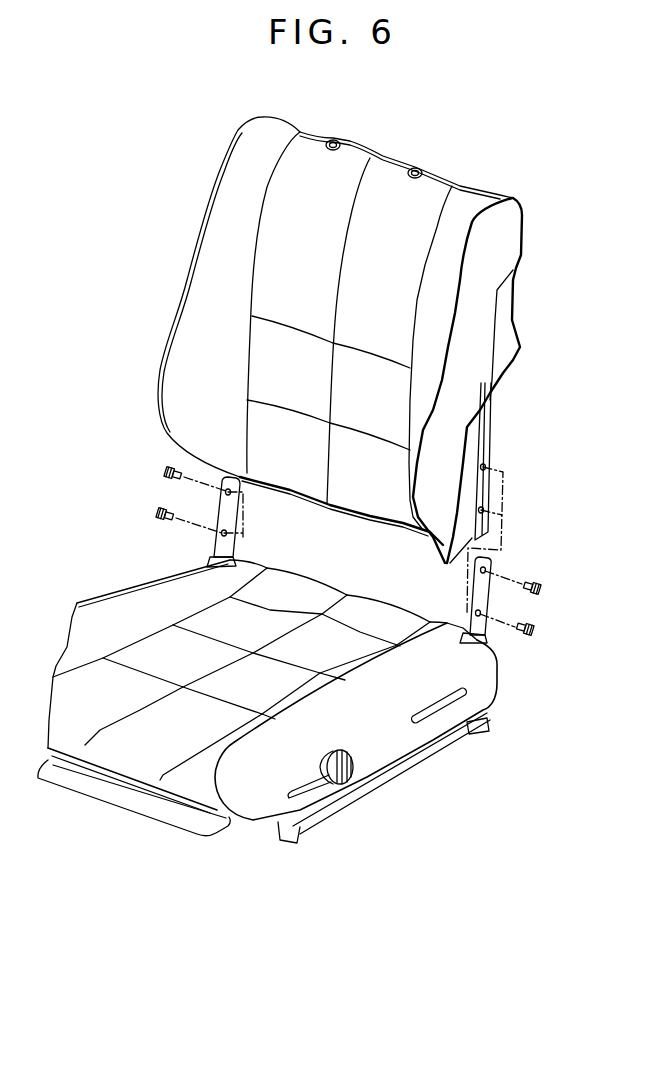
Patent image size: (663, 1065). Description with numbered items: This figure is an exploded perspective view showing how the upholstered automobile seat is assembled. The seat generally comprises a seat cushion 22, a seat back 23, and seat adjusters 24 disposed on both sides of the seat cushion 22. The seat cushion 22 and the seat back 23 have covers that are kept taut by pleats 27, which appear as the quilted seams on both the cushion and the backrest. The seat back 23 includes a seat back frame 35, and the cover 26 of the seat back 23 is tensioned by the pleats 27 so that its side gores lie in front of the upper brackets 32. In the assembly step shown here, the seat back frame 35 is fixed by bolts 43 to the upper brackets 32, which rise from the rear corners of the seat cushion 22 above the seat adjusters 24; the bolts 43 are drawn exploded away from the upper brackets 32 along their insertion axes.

The seat cushion 22 is at (107, 578).
The seat back 23 is at (438, 152).
The seat adjuster 24 is at (419, 782).
The cover 26 is at (480, 322).
The pleats 27 is at (337, 310).
The upper bracket 32 is at (487, 597).
The seat back frame 35 is at (500, 432).
The bolt 43 is at (533, 578).